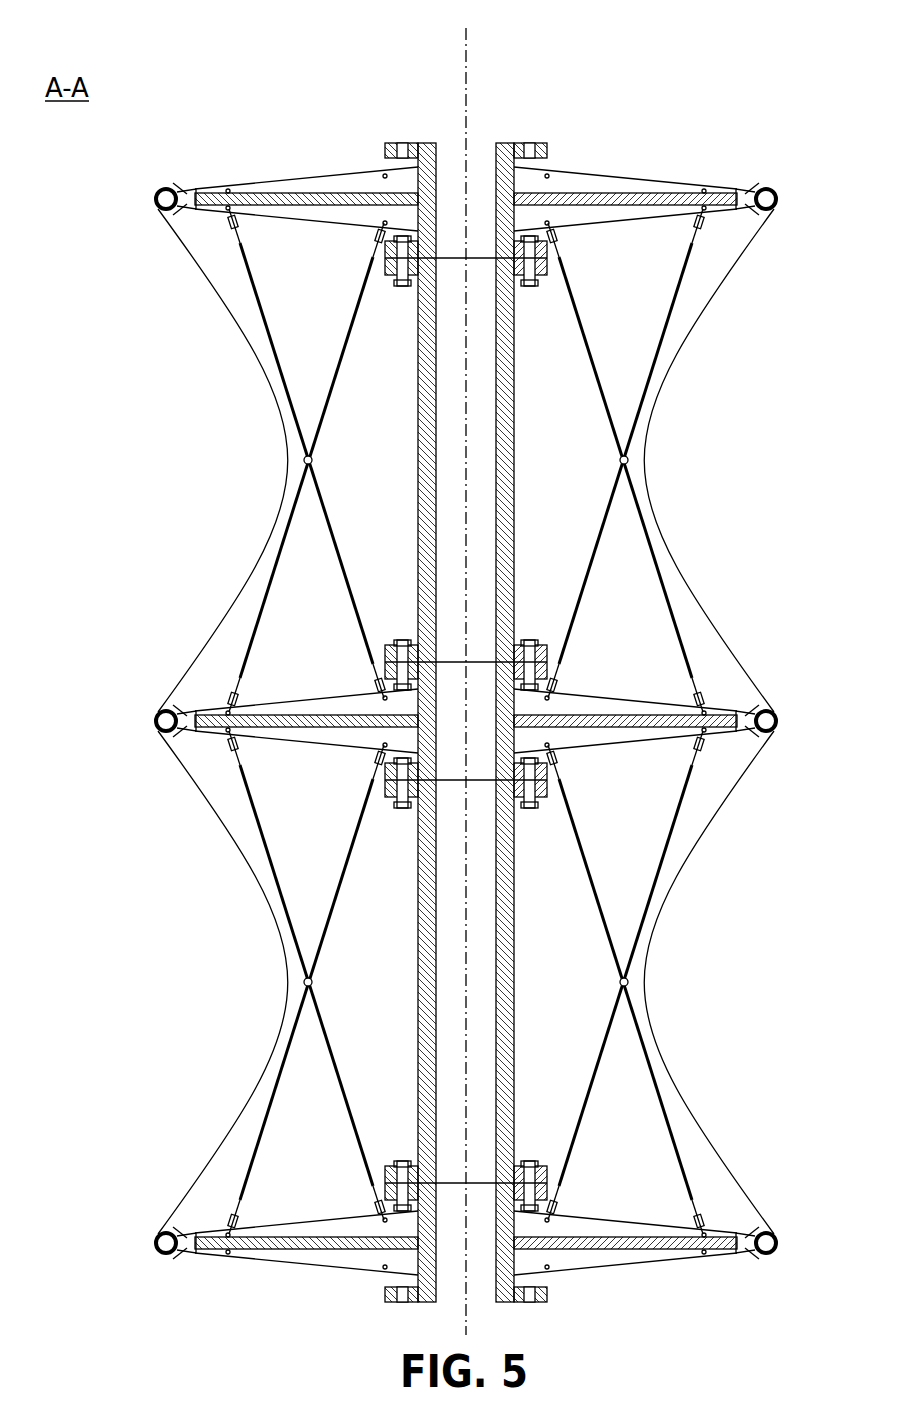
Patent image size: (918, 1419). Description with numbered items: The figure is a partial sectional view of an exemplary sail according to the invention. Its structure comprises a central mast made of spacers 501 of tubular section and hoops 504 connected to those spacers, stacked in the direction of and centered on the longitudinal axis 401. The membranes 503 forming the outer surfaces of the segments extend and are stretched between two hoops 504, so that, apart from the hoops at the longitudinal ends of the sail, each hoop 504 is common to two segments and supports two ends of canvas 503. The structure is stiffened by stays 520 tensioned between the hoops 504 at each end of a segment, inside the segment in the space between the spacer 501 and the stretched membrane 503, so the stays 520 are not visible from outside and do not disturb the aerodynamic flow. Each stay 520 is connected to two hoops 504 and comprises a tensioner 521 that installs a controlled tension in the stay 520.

The longitudinal axis 401 is at (466, 97).
The spacer 501 is at (515, 462).
The membrane 503 is at (684, 348).
The hoop 504 is at (307, 716).
The stay 520 is at (260, 313).
The tensioner 521 is at (240, 250).